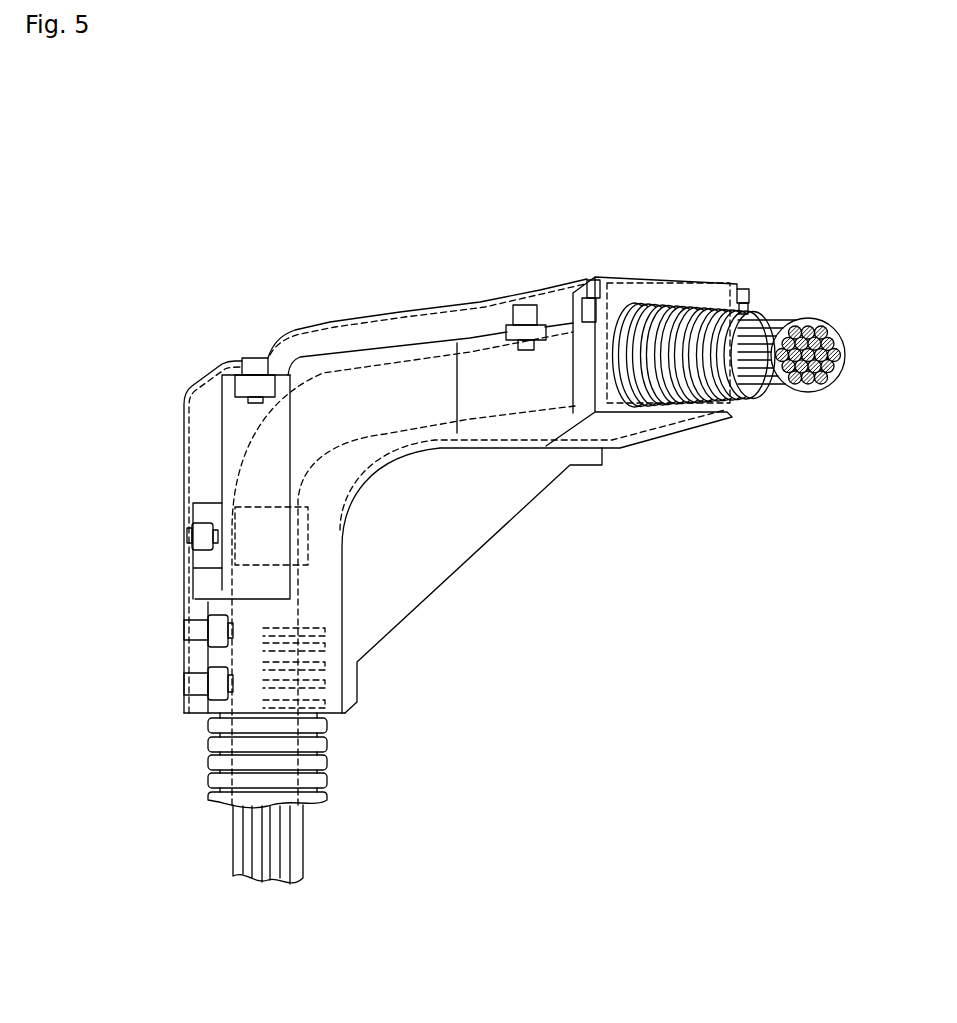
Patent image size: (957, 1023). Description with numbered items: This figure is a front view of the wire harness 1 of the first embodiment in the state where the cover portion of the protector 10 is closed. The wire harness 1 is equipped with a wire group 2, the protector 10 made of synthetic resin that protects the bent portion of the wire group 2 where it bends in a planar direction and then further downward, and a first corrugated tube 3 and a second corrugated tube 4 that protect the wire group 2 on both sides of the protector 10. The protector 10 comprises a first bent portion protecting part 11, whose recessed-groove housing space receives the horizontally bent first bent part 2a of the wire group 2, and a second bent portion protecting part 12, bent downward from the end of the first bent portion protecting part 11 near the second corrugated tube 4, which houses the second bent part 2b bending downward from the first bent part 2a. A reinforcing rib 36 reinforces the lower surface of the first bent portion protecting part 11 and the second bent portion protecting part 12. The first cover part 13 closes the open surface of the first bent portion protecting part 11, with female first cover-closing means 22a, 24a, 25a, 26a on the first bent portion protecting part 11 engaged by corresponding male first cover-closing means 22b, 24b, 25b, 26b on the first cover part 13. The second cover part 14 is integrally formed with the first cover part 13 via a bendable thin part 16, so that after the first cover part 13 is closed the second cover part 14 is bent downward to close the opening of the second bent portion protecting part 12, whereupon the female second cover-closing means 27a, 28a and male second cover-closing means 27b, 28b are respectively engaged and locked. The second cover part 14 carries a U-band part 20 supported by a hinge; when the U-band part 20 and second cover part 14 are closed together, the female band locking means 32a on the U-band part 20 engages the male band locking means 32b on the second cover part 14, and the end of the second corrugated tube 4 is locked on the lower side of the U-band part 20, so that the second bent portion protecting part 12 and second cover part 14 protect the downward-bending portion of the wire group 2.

The wire harness 1 is at (354, 162).
The wire group 2 is at (821, 322).
The first bent part 2a is at (540, 395).
The second bent part 2b is at (298, 608).
The first corrugated tube 3 is at (752, 405).
The second corrugated tube 4 is at (206, 740).
The protector 10 is at (655, 437).
The first bent portion protecting part 11 is at (488, 348).
The second bent portion protecting part 12 is at (237, 438).
The first cover part 13 is at (400, 312).
The second cover part 14 is at (200, 458).
The thin part 16 is at (249, 357).
The U-band part 20 is at (308, 542).
The female first cover-closing means 22a is at (774, 269).
The male first cover-closing means 22b is at (742, 289).
The female first cover-closing means 24a is at (584, 248).
The male first cover-closing means 24b is at (577, 280).
The female first cover-closing means 25a is at (503, 279).
The male first cover-closing means 25b is at (520, 305).
The female first cover-closing means 26a is at (195, 353).
The male first cover-closing means 26b is at (237, 387).
The female second cover-closing means 27a is at (146, 684).
The male second cover-closing means 27b is at (190, 683).
The female second cover-closing means 28a is at (146, 631).
The male second cover-closing means 28b is at (190, 628).
The female band locking means 32a is at (141, 551).
The male band locking means 32b is at (188, 535).
The reinforcing rib 36 is at (466, 549).